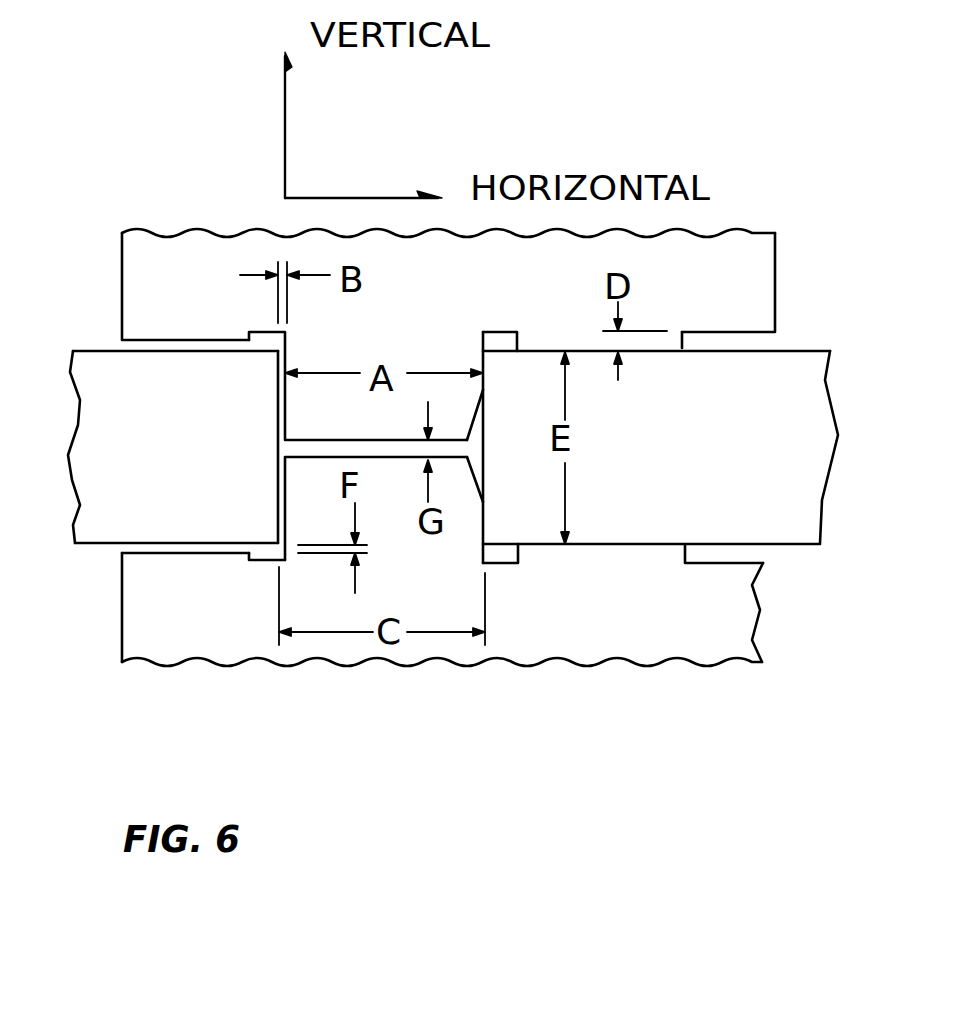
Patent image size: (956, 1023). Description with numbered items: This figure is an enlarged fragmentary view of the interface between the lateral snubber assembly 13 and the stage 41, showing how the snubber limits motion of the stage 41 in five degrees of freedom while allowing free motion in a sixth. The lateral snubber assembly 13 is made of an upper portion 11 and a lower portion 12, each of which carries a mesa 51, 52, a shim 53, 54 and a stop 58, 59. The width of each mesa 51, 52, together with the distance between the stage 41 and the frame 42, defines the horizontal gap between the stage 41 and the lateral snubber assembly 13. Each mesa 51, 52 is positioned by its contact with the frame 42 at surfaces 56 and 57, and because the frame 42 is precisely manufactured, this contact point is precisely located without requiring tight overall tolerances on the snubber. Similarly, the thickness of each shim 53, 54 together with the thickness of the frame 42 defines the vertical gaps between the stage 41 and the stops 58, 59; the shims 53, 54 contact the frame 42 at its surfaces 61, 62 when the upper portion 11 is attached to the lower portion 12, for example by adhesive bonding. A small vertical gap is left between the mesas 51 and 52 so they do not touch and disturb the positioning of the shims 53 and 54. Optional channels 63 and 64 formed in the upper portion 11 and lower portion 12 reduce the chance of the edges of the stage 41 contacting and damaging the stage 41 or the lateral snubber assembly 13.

The upper portion 11 is at (421, 306).
The lower portion 12 is at (449, 639).
The lateral snubber assembly 13 is at (623, 694).
The stage 41 is at (150, 422).
The frame 42 is at (669, 446).
The mesa 51 is at (373, 386).
The mesa 52 is at (383, 508).
The shim 53 is at (690, 346).
The shim 54 is at (690, 548).
The surface 56 is at (484, 375).
The surface 57 is at (485, 518).
The stop 58 is at (172, 340).
The stop 59 is at (172, 553).
The surface 61 is at (532, 351).
The surface 62 is at (613, 547).
The channel 63 is at (264, 328).
The channel 64 is at (248, 562).